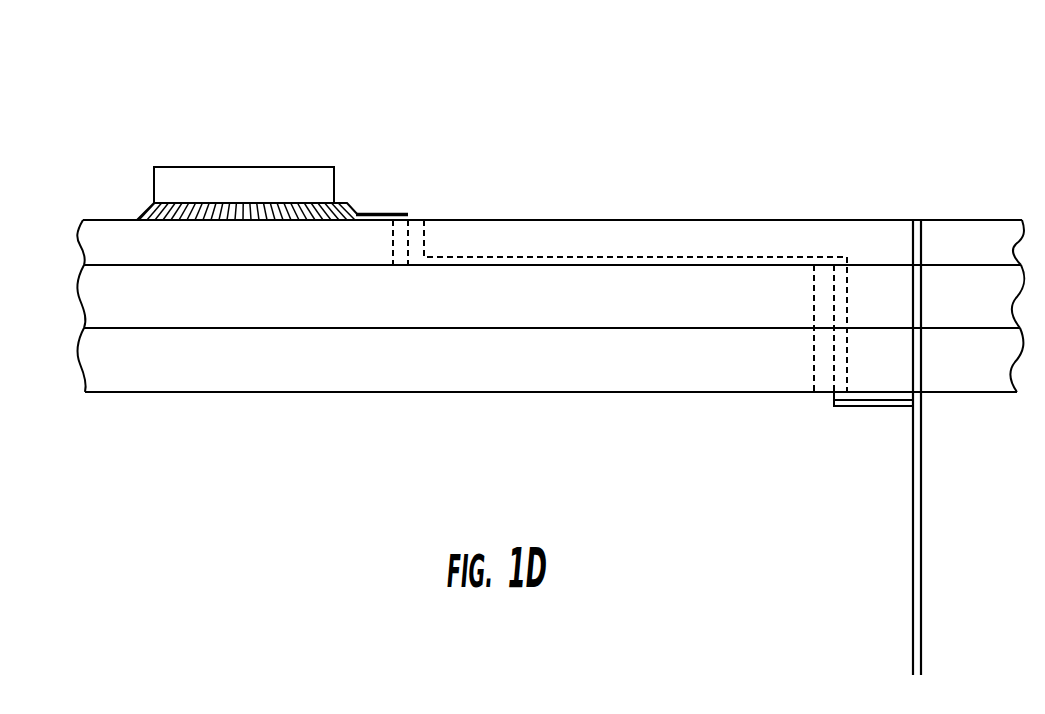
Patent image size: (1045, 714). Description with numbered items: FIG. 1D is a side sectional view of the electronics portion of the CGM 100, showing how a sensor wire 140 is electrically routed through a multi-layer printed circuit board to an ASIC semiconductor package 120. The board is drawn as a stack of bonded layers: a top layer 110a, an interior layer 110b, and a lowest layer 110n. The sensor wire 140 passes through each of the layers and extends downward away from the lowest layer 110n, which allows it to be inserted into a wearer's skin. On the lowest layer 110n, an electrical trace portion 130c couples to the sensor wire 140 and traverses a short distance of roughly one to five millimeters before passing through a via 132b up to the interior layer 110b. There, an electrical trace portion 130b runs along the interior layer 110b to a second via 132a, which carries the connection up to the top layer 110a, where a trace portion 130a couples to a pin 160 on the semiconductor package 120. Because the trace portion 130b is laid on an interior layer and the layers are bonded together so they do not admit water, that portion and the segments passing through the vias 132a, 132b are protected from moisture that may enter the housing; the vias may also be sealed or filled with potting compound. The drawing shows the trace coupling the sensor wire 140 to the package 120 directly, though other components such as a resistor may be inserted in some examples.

The electronics portion of the CGM 100 is at (100, 88).
The top layer of the PCB 110a is at (240, 254).
The interior layer of the PCB 110b is at (240, 309).
The lowest layer of the PCB 110n is at (240, 372).
The first semiconductor package 120 is at (263, 199).
The electrical trace portion on top layer 130a is at (378, 212).
The electrical trace portion on interior layer 130b is at (452, 258).
The electrical trace portion on lowest layer 130c is at (845, 408).
The second via 132a is at (393, 233).
The via 132b is at (814, 287).
The sensor wire 140 is at (913, 527).
The pin 160 is at (345, 206).